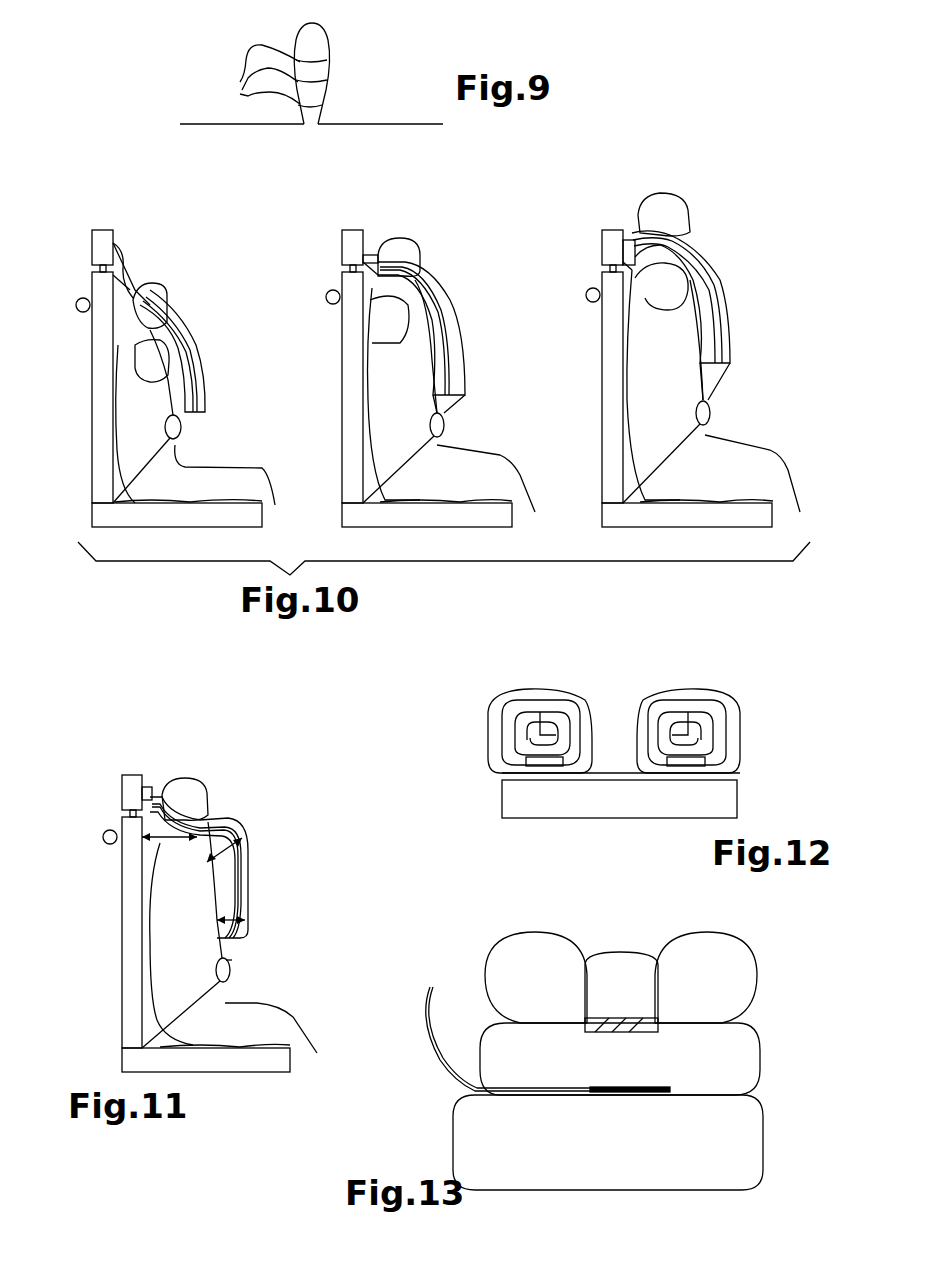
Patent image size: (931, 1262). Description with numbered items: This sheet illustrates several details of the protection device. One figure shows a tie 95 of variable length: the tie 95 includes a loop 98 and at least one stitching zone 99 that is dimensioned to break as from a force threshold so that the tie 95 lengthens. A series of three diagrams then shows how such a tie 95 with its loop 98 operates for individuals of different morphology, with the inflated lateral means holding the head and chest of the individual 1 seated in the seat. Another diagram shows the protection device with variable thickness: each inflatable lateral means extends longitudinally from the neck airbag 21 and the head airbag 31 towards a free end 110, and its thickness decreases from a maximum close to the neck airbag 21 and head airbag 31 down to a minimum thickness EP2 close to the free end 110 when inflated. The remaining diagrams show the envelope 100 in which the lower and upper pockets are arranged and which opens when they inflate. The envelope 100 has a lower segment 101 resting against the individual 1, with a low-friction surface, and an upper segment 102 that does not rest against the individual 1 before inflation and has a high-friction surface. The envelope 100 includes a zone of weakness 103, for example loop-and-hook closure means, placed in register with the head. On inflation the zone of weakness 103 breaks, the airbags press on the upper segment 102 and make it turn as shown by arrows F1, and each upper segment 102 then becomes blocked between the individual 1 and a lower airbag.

In FIG. 10, the individual 1 is at (197, 468).
In FIG. 11, the individual 1 is at (257, 1005).
In FIG. 12, the individual 1 is at (535, 808).
In FIG. 11, the neck airbag 21 is at (150, 810).
In FIG. 11, the head airbag 31 is at (163, 803).
In FIG. 9, the tie 95 is at (337, 132).
In FIG. 10, the tie 95 is at (135, 338).
In FIG. 9, the loop 98 is at (326, 38).
In FIG. 10, the loop 98 is at (140, 373).
In FIG. 9, the stitching zone 99 is at (254, 74).
In FIG. 12, the envelope 100 is at (561, 728).
In FIG. 13, the envelope 100 is at (522, 1075).
In FIG. 12, the lower segment 101 is at (520, 773).
In FIG. 13, the lower segment 101 is at (647, 1100).
In FIG. 12, the upper segment 102 is at (482, 710).
In FIG. 13, the upper segment 102 is at (538, 1100).
In FIG. 12, the zone of weakness 103 is at (655, 702).
In FIG. 11, the free end 110 is at (252, 953).
In FIG. 11, the minimum thickness EP2 is at (238, 917).
In FIG. 12, the arrows F1 is at (577, 712).